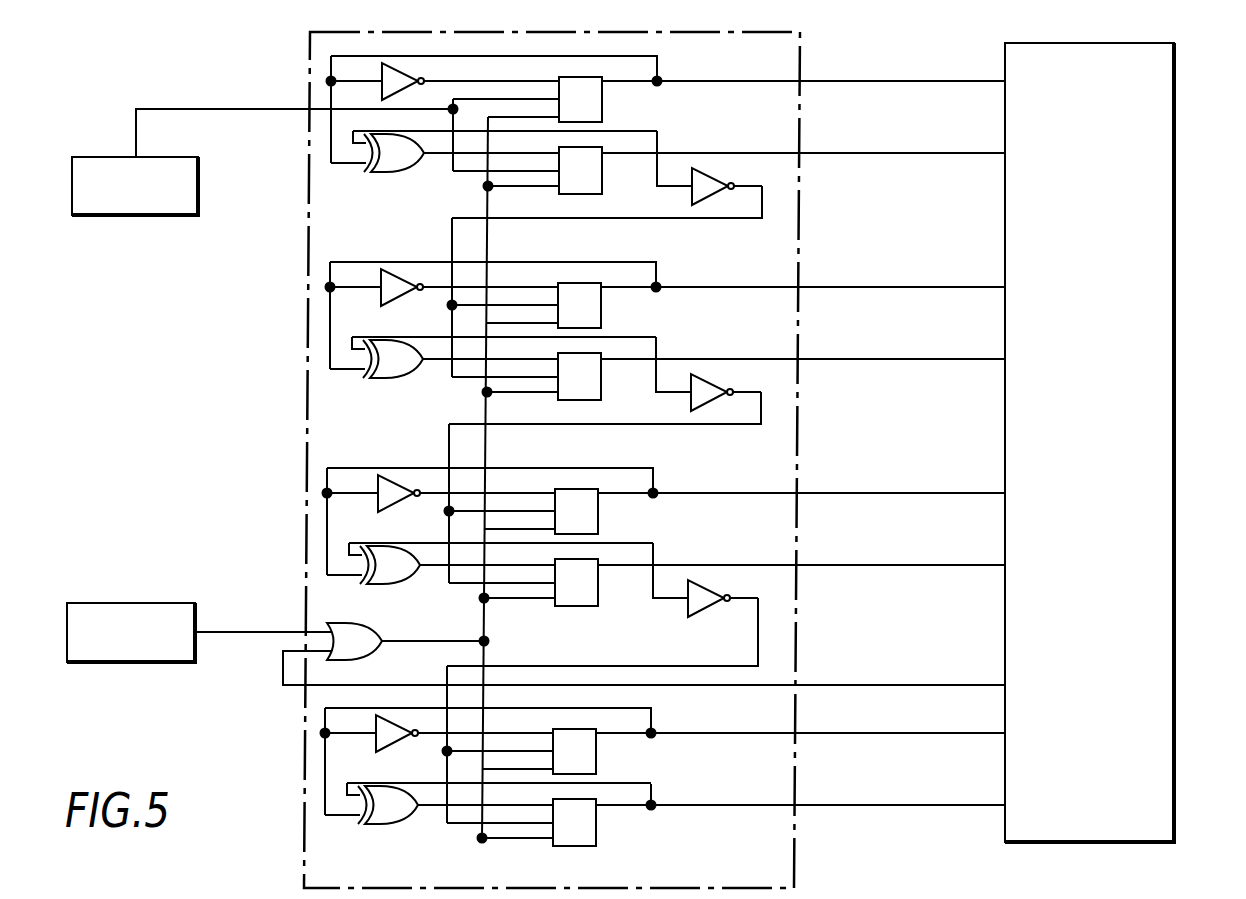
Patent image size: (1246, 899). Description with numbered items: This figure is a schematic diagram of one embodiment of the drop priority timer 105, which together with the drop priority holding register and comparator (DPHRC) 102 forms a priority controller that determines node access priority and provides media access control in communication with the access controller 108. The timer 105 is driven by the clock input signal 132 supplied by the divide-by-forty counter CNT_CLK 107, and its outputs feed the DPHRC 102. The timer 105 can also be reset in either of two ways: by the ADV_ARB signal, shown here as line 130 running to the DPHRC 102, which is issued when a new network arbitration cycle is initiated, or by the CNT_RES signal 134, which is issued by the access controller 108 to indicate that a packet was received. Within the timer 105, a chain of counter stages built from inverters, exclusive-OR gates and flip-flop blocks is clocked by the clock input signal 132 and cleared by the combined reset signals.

The drop priority holding register and comparator (DPHRC) 102 is at (1174, 773).
The drop priority timer 105 is at (794, 864).
The divide-by-forty counter CNT_CLK 107 is at (103, 215).
The access controller 108 is at (95, 603).
The ADV_ARB signal line 130 is at (870, 684).
The clock input signal 132 is at (135, 122).
The CNT_RES signal 134 is at (236, 636).